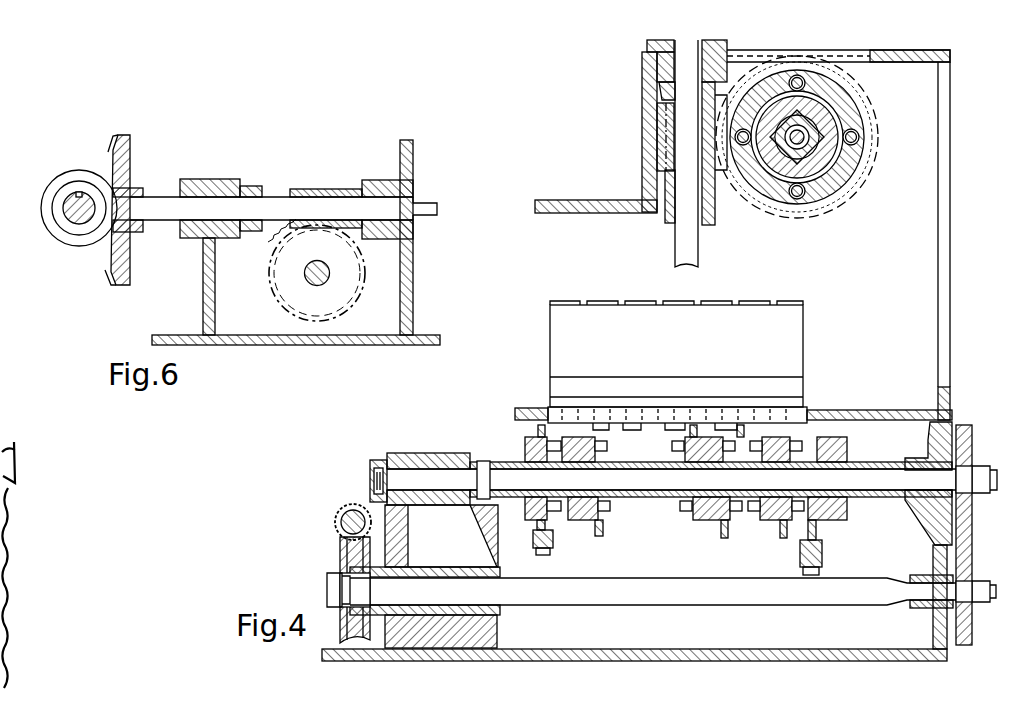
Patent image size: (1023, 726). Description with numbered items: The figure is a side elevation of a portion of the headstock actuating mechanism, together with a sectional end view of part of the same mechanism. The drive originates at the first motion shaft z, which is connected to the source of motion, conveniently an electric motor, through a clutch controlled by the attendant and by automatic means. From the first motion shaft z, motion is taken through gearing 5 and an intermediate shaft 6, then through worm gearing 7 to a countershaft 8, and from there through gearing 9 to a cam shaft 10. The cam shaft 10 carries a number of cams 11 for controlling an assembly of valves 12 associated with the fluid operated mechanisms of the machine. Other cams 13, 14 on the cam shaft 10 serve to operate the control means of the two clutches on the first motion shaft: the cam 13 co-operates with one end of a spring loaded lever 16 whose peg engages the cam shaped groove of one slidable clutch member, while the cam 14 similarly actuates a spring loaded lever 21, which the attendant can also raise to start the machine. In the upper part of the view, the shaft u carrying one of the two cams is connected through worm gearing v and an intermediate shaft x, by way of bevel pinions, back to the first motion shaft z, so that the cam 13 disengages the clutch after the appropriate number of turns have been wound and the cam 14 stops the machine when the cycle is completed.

In FIG. 6, the gearing 5 is at (113, 143).
In FIG. 6, the first motion shaft z is at (77, 222).
In FIG. 6, the intermediate shaft 6 is at (160, 196).
In FIG. 4, the intermediate shaft 6 is at (338, 519).
In FIG. 6, the worm gearing 7 is at (272, 247).
In FIG. 4, the worm gearing 7 is at (347, 548).
In FIG. 6, the countershaft 8 is at (306, 277).
In FIG. 4, the countershaft 8 is at (636, 588).
In FIG. 4, the gearing 9 is at (963, 540).
In FIG. 4, the cam shaft 10 is at (850, 482).
In FIG. 4, the cams 11 is at (690, 433).
In FIG. 4, the assembly of valves 12 is at (606, 426).
In FIG. 4, the cam 13 is at (538, 430).
In FIG. 4, the cam 14 is at (816, 536).
In FIG. 4, the lever 16 is at (533, 538).
In FIG. 4, the lever 21 is at (822, 562).
In FIG. 4, the shaft u is at (815, 133).
In FIG. 4, the worm gearing v is at (660, 148).
In FIG. 4, the intermediate shaft x is at (675, 253).